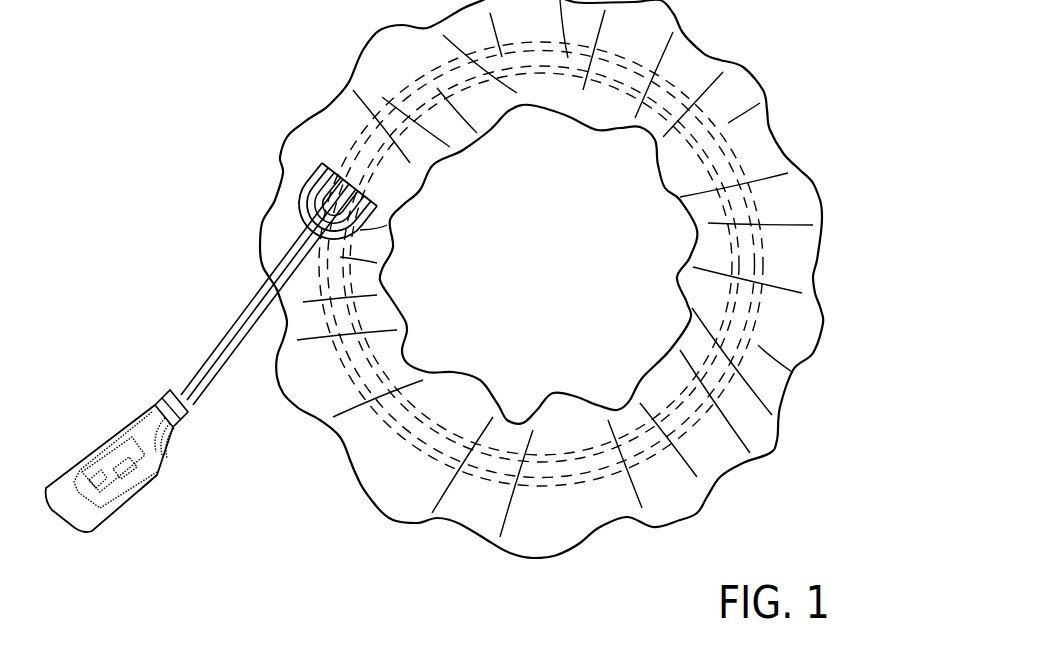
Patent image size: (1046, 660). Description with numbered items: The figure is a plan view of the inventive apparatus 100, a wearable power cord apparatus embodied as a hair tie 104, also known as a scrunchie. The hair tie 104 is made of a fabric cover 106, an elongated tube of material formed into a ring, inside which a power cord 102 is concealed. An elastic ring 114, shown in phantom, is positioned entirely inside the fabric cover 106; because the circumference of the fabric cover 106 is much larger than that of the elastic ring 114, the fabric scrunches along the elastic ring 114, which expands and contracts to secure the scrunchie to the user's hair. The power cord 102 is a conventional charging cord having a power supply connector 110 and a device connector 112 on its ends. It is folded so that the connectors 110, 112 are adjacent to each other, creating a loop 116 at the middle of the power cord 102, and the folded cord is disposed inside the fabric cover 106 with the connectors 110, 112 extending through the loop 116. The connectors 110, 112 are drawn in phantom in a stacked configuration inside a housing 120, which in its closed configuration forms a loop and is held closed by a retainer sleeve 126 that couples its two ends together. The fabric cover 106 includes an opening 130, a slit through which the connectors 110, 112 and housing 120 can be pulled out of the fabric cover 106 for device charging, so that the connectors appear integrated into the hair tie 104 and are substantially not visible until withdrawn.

The inventive apparatus 100 is at (128, 112).
The power cord 102 is at (200, 368).
The hair tie 104 is at (822, 44).
The fabric cover 106 is at (350, 107).
The power supply connector 110 is at (110, 453).
The device connector 112 is at (157, 477).
The elastic ring 114 is at (588, 492).
The loop 116 is at (299, 212).
The housing 120 is at (46, 488).
The retainer sleeve 126 is at (156, 402).
The opening 130 is at (308, 178).